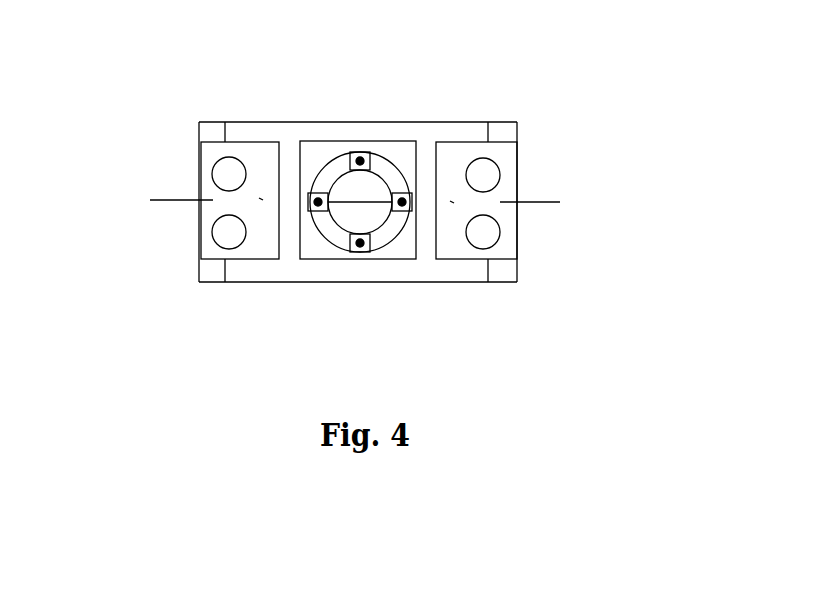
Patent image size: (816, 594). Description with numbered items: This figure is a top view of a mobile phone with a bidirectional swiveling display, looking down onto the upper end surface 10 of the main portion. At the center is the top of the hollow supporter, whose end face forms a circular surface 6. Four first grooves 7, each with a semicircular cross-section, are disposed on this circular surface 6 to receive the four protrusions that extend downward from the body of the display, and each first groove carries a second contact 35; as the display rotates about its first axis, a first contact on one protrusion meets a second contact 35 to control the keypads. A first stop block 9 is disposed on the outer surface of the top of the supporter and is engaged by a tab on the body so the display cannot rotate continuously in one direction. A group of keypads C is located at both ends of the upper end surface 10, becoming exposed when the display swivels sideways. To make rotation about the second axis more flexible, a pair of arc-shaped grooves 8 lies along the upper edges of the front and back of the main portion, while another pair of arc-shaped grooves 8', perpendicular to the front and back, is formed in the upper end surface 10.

The arc-shaped grooves 8 is at (289, 202).
The arc-shaped grooves 8' is at (358, 141).
The first stop block 9 is at (409, 150).
The circular surface 6 is at (311, 239).
The first grooves 7 is at (370, 259).
The second contact 35 is at (418, 188).
The upper end surface 10 is at (511, 166).
The keypads C is at (496, 250).